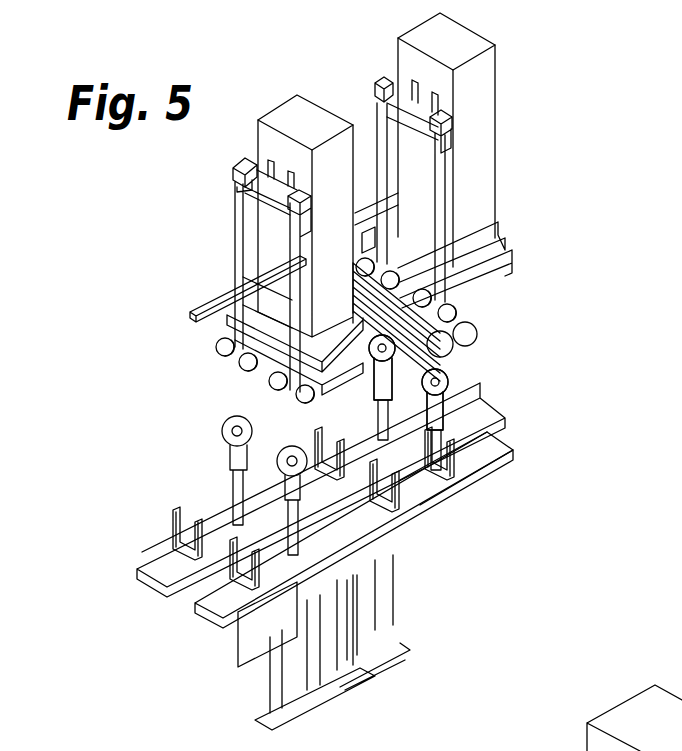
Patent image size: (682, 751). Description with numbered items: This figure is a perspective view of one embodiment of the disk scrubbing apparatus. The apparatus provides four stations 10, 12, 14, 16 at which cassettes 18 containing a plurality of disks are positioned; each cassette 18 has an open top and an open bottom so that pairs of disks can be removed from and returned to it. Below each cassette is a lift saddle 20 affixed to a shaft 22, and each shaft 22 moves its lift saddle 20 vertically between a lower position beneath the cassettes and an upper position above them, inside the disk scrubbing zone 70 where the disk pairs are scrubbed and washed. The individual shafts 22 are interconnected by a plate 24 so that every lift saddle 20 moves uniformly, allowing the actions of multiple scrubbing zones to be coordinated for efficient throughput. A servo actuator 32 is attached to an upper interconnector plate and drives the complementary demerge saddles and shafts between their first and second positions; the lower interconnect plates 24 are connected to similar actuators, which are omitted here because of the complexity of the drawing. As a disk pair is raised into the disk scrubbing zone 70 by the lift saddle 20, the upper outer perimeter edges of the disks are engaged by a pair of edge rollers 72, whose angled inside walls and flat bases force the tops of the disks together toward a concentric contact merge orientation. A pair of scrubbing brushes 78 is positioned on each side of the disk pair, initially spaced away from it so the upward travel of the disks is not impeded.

The station 10 is at (276, 521).
The station 12 is at (230, 600).
The station 14 is at (478, 452).
The station 16 is at (408, 395).
The cassette 18 is at (185, 535).
The lift saddle 20 is at (398, 350).
The shaft 22 is at (395, 383).
The plate 24 is at (262, 615).
The servo actuator 32 is at (297, 112).
The disk scrubbing zone 70 is at (183, 333).
The edge roller 72 is at (245, 368).
The scrubbing brush 78 is at (497, 250).